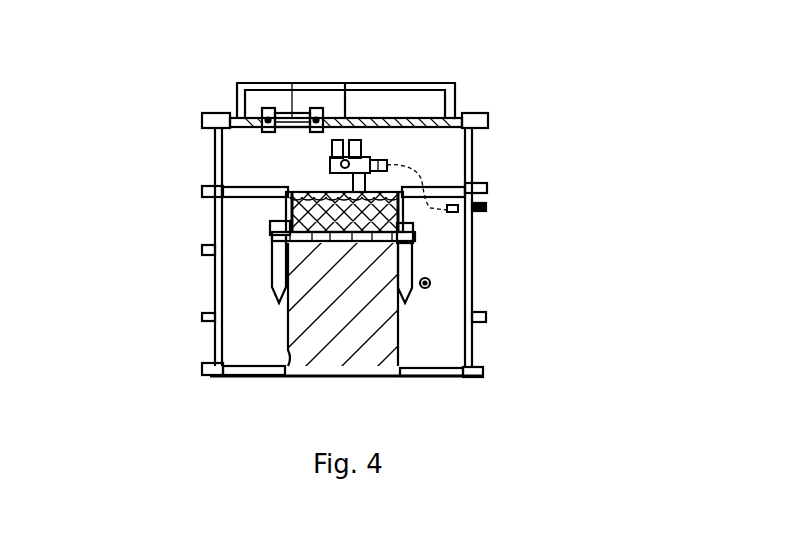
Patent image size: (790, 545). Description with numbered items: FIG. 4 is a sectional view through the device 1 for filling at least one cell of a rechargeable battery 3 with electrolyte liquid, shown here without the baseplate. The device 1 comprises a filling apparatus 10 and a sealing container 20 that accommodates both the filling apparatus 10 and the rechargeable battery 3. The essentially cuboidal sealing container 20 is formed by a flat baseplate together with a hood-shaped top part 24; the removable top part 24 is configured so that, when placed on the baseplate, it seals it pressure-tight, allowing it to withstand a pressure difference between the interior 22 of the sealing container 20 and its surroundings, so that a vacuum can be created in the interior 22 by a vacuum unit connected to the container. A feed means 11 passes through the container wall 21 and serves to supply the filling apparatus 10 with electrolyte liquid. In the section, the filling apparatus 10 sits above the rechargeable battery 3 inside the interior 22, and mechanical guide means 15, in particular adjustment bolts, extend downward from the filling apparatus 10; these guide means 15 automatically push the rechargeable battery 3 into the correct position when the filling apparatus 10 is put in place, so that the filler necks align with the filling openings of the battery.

The device 1 is at (134, 72).
The sealing container 20 is at (541, 97).
The interior 22 is at (245, 318).
The top part 24 is at (471, 299).
The container wall 21 is at (479, 238).
The filling apparatus 10 is at (257, 211).
The feed means 11 is at (487, 198).
The mechanical guide means 15 is at (280, 266).
The rechargeable battery 3 is at (358, 330).